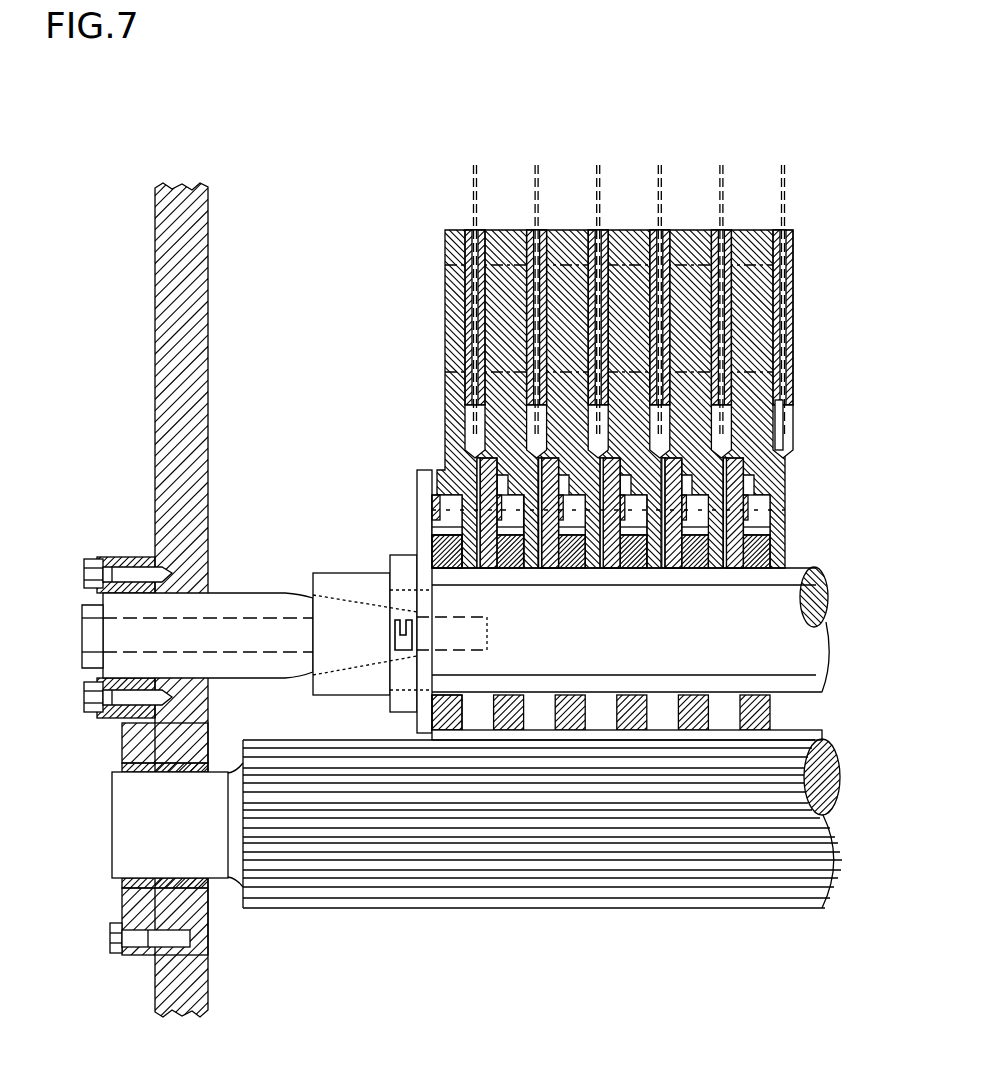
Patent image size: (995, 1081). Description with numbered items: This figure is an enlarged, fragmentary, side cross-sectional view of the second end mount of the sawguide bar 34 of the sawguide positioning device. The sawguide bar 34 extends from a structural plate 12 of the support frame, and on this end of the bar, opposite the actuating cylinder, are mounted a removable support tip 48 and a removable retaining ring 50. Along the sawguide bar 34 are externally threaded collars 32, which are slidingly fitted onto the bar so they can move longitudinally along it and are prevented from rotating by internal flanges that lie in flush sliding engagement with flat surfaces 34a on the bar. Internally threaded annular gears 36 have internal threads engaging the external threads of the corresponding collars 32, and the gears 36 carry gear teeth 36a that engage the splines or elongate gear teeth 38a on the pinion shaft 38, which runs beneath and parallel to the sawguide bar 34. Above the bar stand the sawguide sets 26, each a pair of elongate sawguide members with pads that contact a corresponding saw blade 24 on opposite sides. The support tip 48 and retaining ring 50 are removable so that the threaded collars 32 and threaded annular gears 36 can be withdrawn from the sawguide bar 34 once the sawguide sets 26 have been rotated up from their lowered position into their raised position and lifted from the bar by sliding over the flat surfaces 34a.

The structural plates 12 is at (162, 488).
The saw blades 24 is at (787, 192).
The sawguide set 26 is at (785, 452).
The externally threaded collars 32 is at (787, 560).
The sawguide bar 34 is at (828, 605).
The flat surfaces 34a is at (730, 652).
The internally threaded annular gears 36 is at (763, 543).
The gear teeth 36a is at (775, 728).
The pinion shaft 38 is at (828, 780).
The splines or elongate gear teeth 38a is at (822, 741).
The removable support tip 48 is at (148, 628).
The removable retaining ring 50 is at (390, 557).